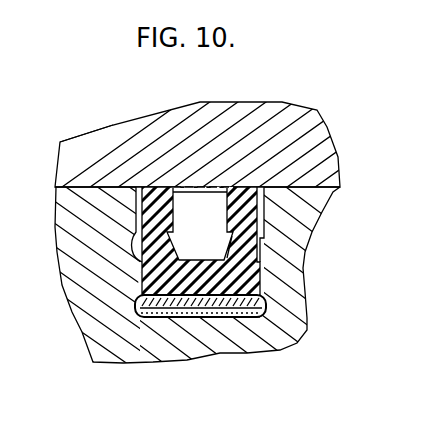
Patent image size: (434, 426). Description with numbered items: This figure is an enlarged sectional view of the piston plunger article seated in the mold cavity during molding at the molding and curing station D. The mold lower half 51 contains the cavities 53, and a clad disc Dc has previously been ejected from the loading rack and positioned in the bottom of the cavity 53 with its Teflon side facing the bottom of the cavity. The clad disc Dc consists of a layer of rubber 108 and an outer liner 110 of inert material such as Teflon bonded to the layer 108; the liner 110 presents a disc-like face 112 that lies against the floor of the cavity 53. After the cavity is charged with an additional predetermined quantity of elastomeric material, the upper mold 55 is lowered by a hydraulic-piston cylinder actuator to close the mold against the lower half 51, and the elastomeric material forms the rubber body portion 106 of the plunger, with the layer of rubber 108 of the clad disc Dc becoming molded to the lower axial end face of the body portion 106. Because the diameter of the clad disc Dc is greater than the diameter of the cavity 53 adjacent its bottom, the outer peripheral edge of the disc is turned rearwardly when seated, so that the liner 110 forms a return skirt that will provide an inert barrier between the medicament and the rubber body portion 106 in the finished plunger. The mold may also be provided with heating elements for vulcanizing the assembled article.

The upper mold 55 is at (318, 128).
The mold lower half 51 is at (293, 266).
The body portion 106 is at (265, 214).
The cavities 53 is at (143, 273).
The layer of rubber 108 is at (262, 303).
The outer liner 110 is at (213, 318).
The disc-like face 112 is at (172, 318).
The molding and curing station D is at (103, 128).
The clad disc Dc is at (187, 320).